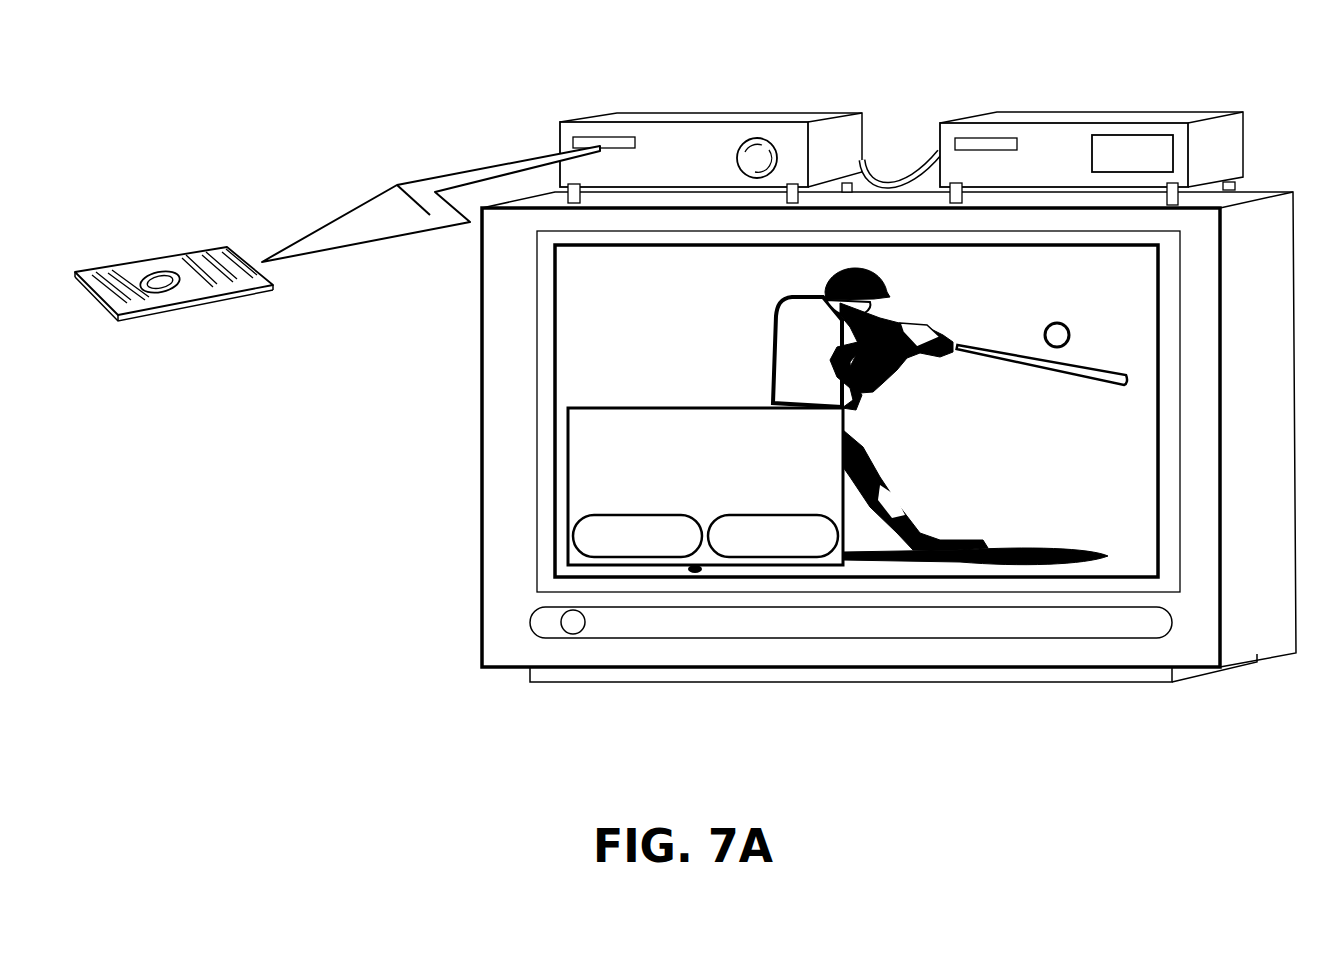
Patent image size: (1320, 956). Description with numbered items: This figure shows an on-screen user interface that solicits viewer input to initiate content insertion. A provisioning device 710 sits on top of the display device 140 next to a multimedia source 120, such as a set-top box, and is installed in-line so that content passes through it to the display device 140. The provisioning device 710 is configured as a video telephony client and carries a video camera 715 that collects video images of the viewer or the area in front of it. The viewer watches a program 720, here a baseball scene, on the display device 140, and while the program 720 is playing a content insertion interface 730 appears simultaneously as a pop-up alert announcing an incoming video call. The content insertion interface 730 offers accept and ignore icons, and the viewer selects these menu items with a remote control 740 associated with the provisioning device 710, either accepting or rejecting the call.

The display device 140 is at (482, 412).
The multimedia source 120 is at (980, 121).
The provisioning device 710 is at (600, 121).
The video camera 715 is at (758, 138).
The program 720 is at (568, 309).
The content insertion interface 730 is at (572, 456).
The remote control 740 is at (190, 252).